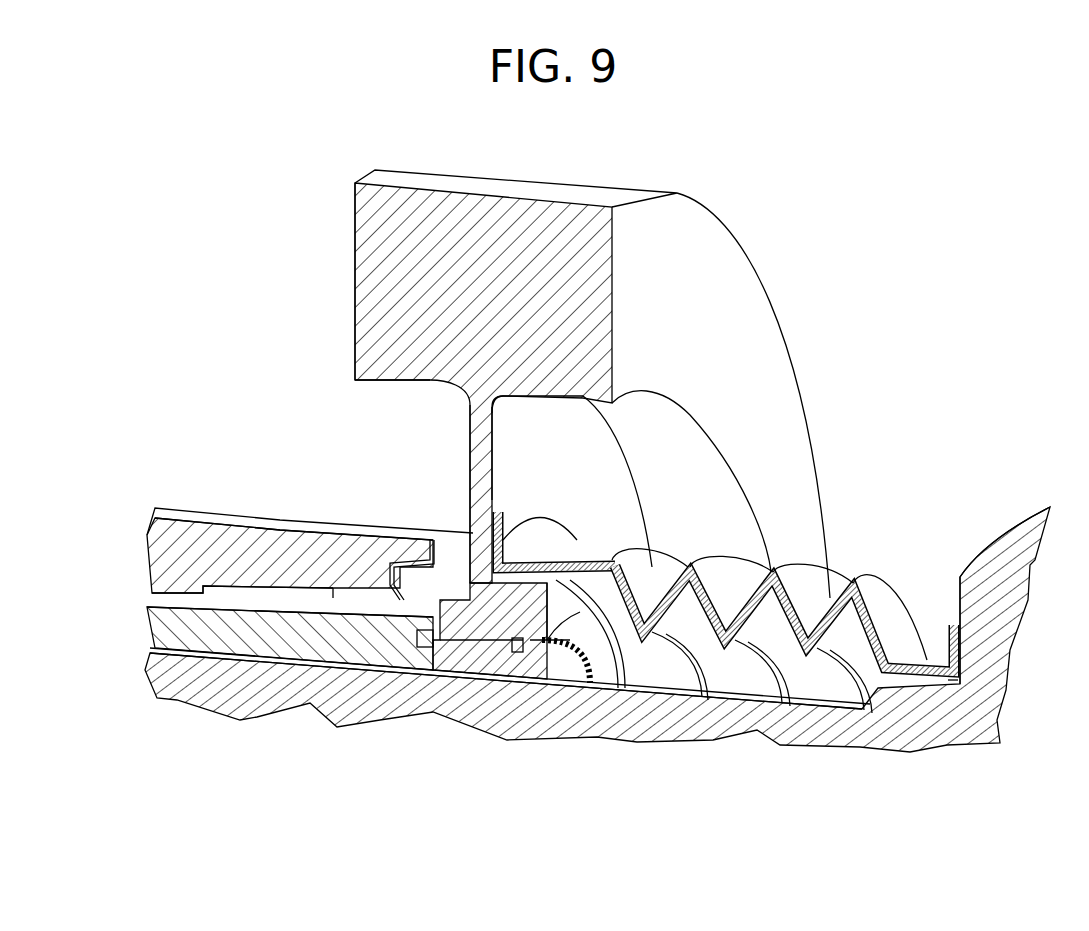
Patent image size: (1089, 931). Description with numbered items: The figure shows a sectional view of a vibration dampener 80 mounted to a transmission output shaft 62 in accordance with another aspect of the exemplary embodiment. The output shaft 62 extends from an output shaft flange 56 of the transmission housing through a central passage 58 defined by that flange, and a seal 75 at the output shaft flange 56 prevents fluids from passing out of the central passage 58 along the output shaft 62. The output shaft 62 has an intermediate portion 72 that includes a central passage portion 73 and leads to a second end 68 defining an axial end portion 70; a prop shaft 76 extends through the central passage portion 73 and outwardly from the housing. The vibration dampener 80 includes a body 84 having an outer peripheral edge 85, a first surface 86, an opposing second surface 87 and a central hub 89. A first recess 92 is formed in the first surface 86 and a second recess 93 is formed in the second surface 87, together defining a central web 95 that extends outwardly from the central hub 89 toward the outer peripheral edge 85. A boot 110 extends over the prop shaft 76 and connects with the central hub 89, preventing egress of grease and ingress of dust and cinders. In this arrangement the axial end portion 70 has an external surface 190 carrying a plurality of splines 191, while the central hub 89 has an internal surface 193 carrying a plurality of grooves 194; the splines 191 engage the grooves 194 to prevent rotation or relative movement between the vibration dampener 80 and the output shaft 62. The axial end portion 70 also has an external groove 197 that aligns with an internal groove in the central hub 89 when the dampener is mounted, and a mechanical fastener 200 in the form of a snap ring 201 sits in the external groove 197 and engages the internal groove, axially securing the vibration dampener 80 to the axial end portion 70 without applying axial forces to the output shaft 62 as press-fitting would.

The vibration dampener 80 is at (320, 164).
The body 84 is at (420, 170).
The outer peripheral edge 85 is at (595, 195).
The first surface 86 is at (645, 250).
The second surface 87 is at (348, 277).
The second recess 93 is at (358, 412).
The central web 95 is at (481, 412).
The first recess 92 is at (670, 435).
The output shaft flange 56 is at (205, 505).
The prop shaft 76 is at (1003, 503).
The central hub 89 is at (496, 538).
The seal 75 is at (415, 578).
The plurality of grooves 194 is at (605, 580).
The boot 110 is at (870, 582).
The output shaft 62 is at (188, 622).
The mechanical fastener 200 is at (540, 616).
The intermediate portion 72 is at (180, 673).
The central passage 58 is at (178, 657).
The central passage portion 73 is at (235, 600).
The internal surface 193 is at (279, 658).
The external surface 190 is at (452, 640).
The snap ring 201 is at (447, 640).
The external groove 197 is at (516, 653).
The axial end portion 70 is at (530, 655).
The plurality of splines 191 is at (567, 663).
The second end 68 is at (568, 660).